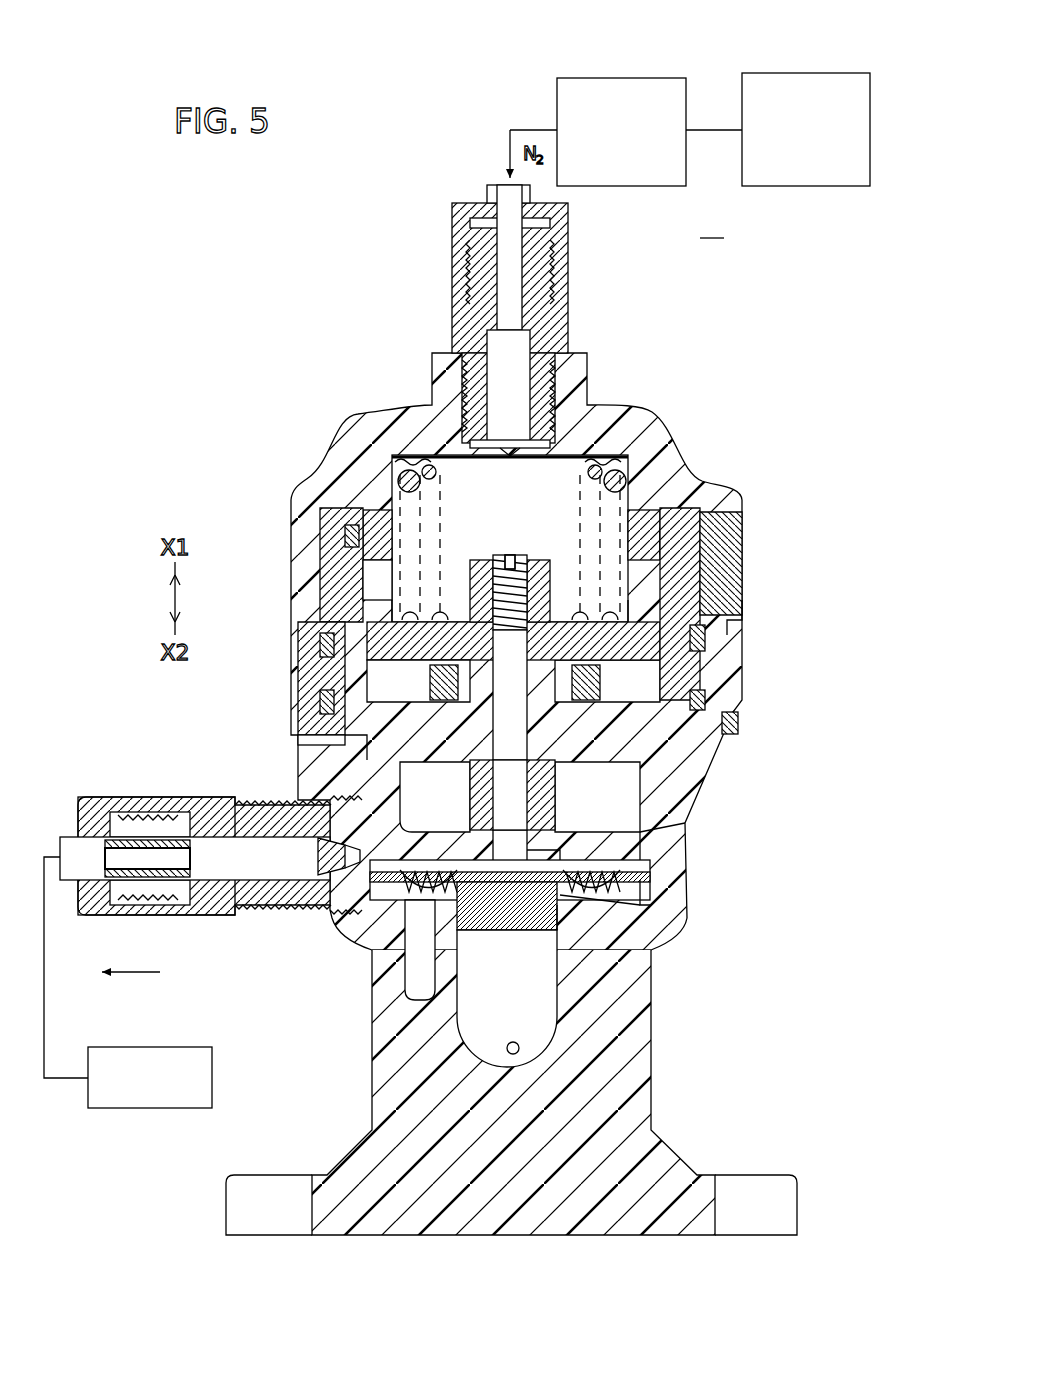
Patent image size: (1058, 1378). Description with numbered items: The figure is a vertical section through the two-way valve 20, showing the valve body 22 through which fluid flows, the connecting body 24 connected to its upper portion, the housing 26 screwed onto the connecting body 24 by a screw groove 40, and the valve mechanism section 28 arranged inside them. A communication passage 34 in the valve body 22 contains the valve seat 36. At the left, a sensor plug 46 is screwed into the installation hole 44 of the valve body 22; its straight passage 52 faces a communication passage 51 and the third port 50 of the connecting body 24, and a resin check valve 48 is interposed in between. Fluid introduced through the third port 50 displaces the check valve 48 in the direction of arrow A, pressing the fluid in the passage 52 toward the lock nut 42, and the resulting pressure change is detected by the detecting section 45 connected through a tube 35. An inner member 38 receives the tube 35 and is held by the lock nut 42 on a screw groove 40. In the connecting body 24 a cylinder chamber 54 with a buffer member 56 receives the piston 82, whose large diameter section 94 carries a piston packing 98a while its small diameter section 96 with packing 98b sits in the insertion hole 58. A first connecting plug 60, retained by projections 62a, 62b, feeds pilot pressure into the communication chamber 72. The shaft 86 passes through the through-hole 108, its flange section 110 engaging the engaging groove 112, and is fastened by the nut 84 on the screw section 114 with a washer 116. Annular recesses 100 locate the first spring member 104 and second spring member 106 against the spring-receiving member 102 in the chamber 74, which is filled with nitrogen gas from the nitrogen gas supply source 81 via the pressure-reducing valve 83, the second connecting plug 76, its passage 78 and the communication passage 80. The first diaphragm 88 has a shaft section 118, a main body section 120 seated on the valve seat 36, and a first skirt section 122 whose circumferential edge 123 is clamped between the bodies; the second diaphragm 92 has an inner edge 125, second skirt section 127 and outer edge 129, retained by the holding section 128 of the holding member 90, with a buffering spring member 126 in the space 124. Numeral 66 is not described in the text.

The two-way valve 20 is at (712, 226).
The valve body 22 is at (612, 1200).
The connecting body 24 is at (620, 797).
The housing 26 is at (737, 497).
The valve mechanism section 28 is at (620, 580).
The communication passage 34 is at (513, 1054).
The tube 35 is at (518, 130).
The valve seat 36 is at (480, 935).
The inner member 38 is at (487, 240).
The screw groove 40 is at (700, 532).
The lock nut 42 is at (562, 292).
The installation hole 44 is at (255, 908).
The detecting section 45 is at (190, 1047).
The sensor plug 46 is at (195, 800).
The check valve 48 is at (322, 862).
The third port 50 is at (360, 872).
The communication passage 51 is at (335, 868).
The passage 52 is at (218, 875).
The cylinder chamber 54 is at (320, 642).
The buffer member 56 is at (320, 672).
The insertion hole 58 is at (732, 750).
The first connecting plug 60 is at (744, 695).
The projection 62a is at (738, 722).
The projection 62b is at (742, 620).
The O-ring 66 is at (330, 620).
The communication chamber 72 is at (690, 690).
The chamber 74 is at (433, 497).
The second connecting plug 76 is at (566, 325).
The passage 78 is at (497, 350).
The communication passage 80 is at (513, 445).
The nitrogen gas supply source 81 is at (850, 73).
The piston 82 is at (390, 595).
The pressure-reducing valve 83 is at (660, 78).
The nut 84 is at (478, 565).
The shaft 86 is at (520, 552).
The first diaphragm 88 is at (533, 935).
The holding member 90 is at (590, 800).
The second diaphragm 92 is at (660, 876).
The large diameter section 94 is at (600, 618).
The small diameter section 96 is at (330, 727).
The piston packing 98a is at (345, 606).
The piston packing 98b is at (365, 742).
The annular recess 100 is at (430, 605).
The spring-receiving member 102 is at (628, 470).
The first spring member 104 is at (625, 456).
The second spring member 106 is at (588, 456).
The through-hole 108 is at (430, 692).
The flange section 110 is at (426, 800).
The engaging groove 112 is at (300, 792).
The screw section 114 is at (498, 555).
The washer 116 is at (540, 565).
The shaft section 118 is at (620, 782).
The main body section 120 is at (507, 935).
The first skirt section 122 is at (415, 898).
The circumferential edge 123 is at (650, 900).
The space 124 is at (605, 898).
The inner edge 125 is at (580, 928).
The buffering spring member 126 is at (620, 915).
The second skirt section 127 is at (365, 905).
The holding section 128 is at (640, 842).
The outer edge 129 is at (620, 856).
The arrow A is at (131, 990).